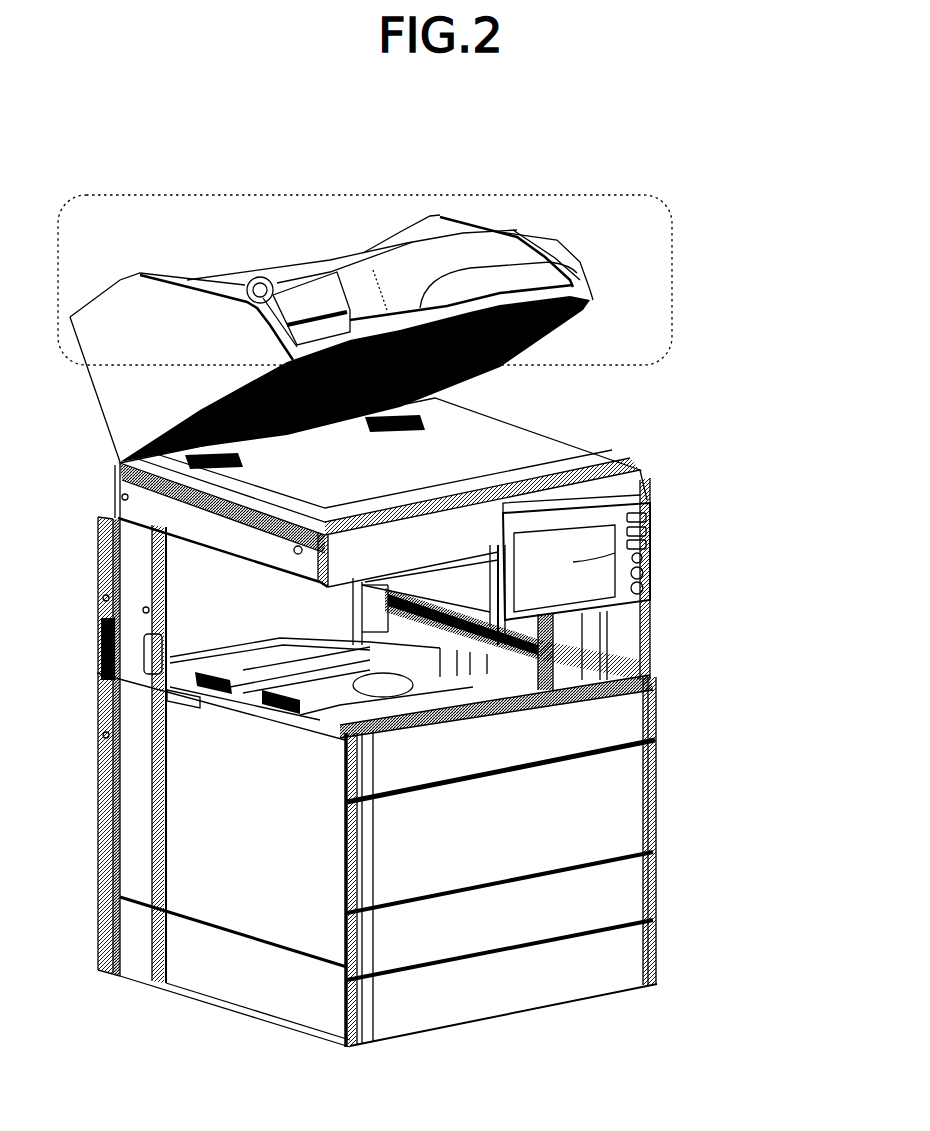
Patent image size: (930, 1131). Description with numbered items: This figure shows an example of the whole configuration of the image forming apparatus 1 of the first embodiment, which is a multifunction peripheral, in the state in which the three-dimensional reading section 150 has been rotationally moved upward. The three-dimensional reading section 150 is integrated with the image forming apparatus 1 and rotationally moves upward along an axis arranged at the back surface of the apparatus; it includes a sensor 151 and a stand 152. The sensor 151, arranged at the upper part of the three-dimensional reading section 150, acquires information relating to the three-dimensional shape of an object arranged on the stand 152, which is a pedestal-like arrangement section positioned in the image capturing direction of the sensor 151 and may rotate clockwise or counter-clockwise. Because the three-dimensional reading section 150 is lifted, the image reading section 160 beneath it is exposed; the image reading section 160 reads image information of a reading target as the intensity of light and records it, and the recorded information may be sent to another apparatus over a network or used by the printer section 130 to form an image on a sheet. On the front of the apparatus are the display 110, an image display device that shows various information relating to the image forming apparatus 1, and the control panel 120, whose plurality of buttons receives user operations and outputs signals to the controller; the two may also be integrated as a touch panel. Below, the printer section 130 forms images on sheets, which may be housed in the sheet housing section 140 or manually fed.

The image forming apparatus 1 is at (725, 182).
The display 110 is at (657, 534).
The control panel 120 is at (657, 577).
The printer section 130 is at (672, 678).
The sheet housing section 140 is at (672, 855).
The three-dimensional reading section 150 is at (560, 197).
The sensor 151 is at (517, 230).
The stand 152 is at (577, 273).
The image reading section 160 is at (470, 458).